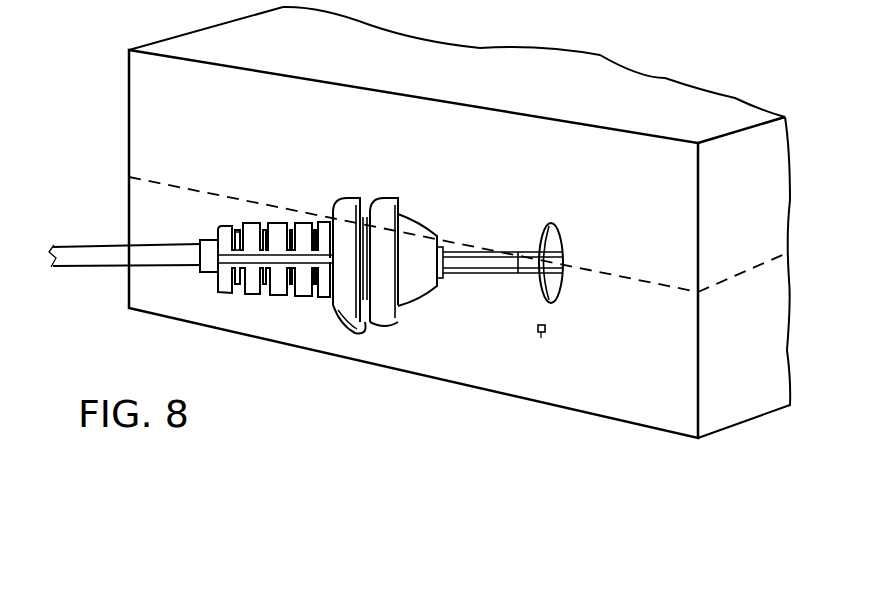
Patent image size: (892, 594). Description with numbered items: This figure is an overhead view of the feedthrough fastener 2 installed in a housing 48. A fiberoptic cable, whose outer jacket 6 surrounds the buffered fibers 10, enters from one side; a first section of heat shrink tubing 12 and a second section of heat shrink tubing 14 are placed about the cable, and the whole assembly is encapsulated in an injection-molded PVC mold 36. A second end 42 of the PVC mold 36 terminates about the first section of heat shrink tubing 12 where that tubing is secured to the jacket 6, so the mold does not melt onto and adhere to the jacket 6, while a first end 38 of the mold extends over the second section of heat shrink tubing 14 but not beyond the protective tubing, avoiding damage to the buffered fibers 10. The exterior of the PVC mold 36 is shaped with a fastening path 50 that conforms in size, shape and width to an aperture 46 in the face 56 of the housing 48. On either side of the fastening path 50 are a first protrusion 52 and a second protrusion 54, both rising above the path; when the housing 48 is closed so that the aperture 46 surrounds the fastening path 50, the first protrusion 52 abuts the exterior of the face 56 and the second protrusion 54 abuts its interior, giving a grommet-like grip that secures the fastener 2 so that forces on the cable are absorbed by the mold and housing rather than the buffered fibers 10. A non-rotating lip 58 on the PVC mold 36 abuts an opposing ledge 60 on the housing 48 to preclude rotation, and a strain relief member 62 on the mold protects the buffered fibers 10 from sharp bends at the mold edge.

The feedthrough fastener 2 is at (272, 137).
The outer jacket 6 is at (88, 264).
The buffered fibers 10 is at (518, 262).
The first section of heat shrink tubing 12 is at (210, 274).
The second section of heat shrink tubing 14 is at (447, 276).
The PVC mold 36 is at (407, 262).
The first end of PVC mold 38 is at (438, 243).
The second end of PVC mold 42 is at (216, 236).
The aperture 46 is at (553, 288).
The housing 48 is at (730, 400).
The fastening path 50 is at (366, 228).
The first protrusion 52 is at (347, 207).
The second protrusion 54 is at (386, 216).
The face 56 is at (140, 88).
The non-rotating lip 58 is at (360, 342).
The opposing ledge 60 is at (541, 339).
The strain relief member 62 is at (249, 228).